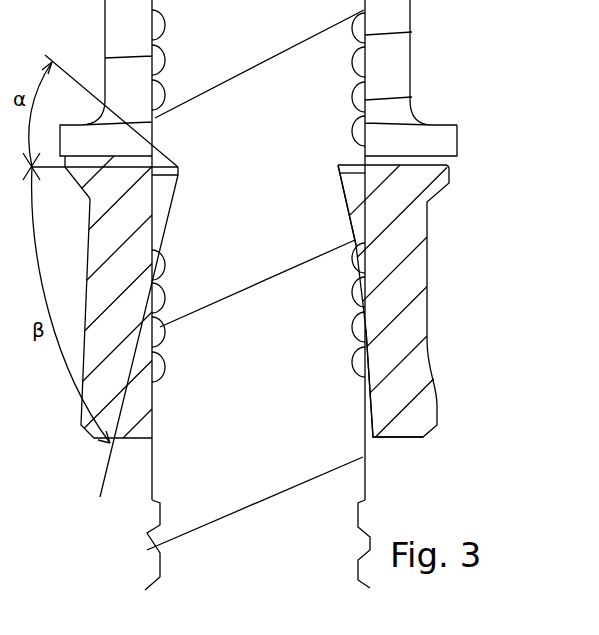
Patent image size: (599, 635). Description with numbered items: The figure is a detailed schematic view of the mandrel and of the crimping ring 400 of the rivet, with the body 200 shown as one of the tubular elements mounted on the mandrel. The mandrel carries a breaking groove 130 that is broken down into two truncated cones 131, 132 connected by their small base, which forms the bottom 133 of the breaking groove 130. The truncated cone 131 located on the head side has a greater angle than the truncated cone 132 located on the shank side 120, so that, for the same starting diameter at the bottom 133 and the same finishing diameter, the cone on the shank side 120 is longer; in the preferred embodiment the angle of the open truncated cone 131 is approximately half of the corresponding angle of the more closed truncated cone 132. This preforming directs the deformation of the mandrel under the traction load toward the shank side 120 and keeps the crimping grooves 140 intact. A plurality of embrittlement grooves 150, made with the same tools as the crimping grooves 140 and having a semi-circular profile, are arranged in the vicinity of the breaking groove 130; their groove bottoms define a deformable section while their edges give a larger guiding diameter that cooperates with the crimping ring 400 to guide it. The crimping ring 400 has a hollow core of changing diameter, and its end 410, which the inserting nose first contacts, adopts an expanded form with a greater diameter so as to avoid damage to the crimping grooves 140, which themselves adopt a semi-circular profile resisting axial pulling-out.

The shank side 120 is at (193, 562).
The breaking groove 130 is at (348, 203).
The truncated cone 131 is at (347, 147).
The truncated cone 132 is at (338, 222).
The bottom of the breaking groove 133 is at (338, 165).
The crimping grooves 140 is at (157, 28).
The embrittlement grooves 150 is at (358, 342).
The body 200 is at (403, 55).
The crimping ring 400 is at (408, 317).
The end of the crimping ring hollow core 410 is at (368, 425).